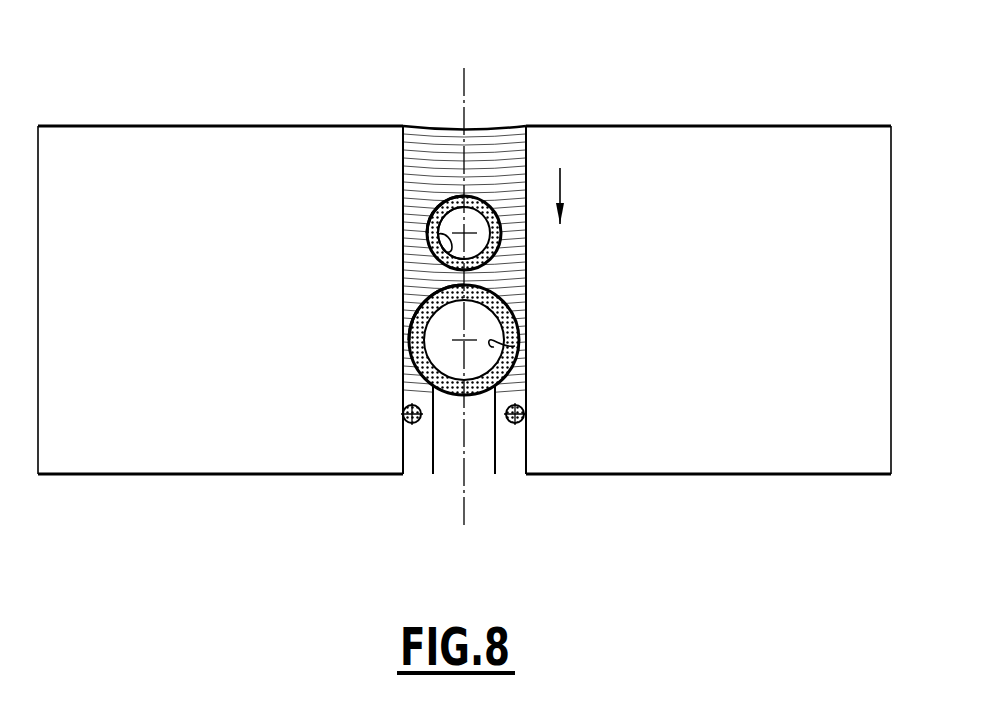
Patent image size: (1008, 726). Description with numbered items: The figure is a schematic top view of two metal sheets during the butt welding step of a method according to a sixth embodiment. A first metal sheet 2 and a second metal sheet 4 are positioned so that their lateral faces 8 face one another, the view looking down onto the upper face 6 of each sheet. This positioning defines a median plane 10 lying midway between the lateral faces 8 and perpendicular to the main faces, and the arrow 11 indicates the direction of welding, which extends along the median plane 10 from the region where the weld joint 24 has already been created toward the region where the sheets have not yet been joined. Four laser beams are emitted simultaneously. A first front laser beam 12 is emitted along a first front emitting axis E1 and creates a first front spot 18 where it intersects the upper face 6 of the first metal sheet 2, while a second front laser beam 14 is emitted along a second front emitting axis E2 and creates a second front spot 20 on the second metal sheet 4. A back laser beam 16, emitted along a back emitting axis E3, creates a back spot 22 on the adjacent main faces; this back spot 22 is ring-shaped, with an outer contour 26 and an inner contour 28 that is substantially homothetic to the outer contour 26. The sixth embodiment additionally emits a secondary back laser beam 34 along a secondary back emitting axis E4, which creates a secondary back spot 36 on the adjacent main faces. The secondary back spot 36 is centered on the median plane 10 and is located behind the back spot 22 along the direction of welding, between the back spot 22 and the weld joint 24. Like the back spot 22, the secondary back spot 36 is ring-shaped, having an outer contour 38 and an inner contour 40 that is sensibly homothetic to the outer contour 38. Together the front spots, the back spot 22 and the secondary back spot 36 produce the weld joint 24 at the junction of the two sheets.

The first metal sheet 2 is at (280, 122).
The second metal sheet 4 is at (666, 122).
The upper face 6 is at (148, 126).
The lateral face 8 is at (437, 455).
The median plane 10 is at (465, 97).
The arrow 11 is at (563, 187).
The first front laser beam 12 is at (404, 410).
The second front laser beam 14 is at (529, 396).
The back laser beam 16 is at (405, 326).
The first front spot 18 is at (400, 385).
The second front spot 20 is at (533, 376).
The back spot 22 is at (587, 307).
The weld joint 24 is at (422, 172).
The outer contour 26 is at (518, 312).
The inner contour 28 is at (515, 346).
The secondary back laser beam 34 is at (506, 241).
The secondary back spot 36 is at (413, 222).
The outer contour 38 is at (438, 234).
The inner contour 40 is at (457, 264).
The first front emitting axis E1 is at (402, 412).
The second front emitting axis E2 is at (520, 421).
The back emitting axis E3 is at (413, 315).
The secondary back emitting axis E4 is at (458, 230).